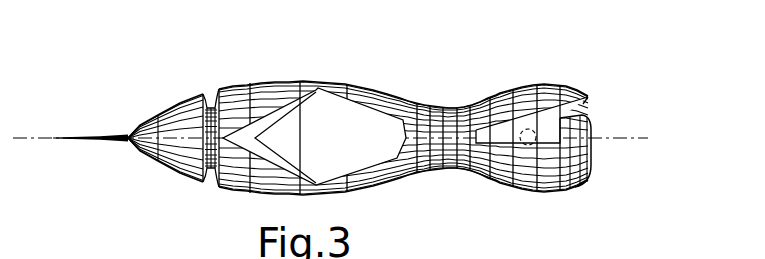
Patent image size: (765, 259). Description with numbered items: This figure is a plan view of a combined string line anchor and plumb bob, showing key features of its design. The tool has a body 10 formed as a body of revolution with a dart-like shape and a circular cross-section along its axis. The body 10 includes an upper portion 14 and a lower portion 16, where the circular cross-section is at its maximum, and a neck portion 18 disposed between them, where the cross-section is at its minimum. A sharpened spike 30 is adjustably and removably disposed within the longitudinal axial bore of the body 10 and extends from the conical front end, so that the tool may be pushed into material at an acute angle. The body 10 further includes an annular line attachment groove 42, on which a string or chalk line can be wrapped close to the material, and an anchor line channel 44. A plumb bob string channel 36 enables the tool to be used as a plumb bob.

The body 10 is at (380, 91).
The upper portion 14 is at (553, 82).
The lower portion 16 is at (283, 117).
The neck portion 18 is at (446, 108).
The sharpened spike 30 is at (108, 133).
The plumb bob string channel 36 is at (543, 117).
The annular line attachment groove 42 is at (210, 172).
The anchor line channel 44 is at (157, 163).